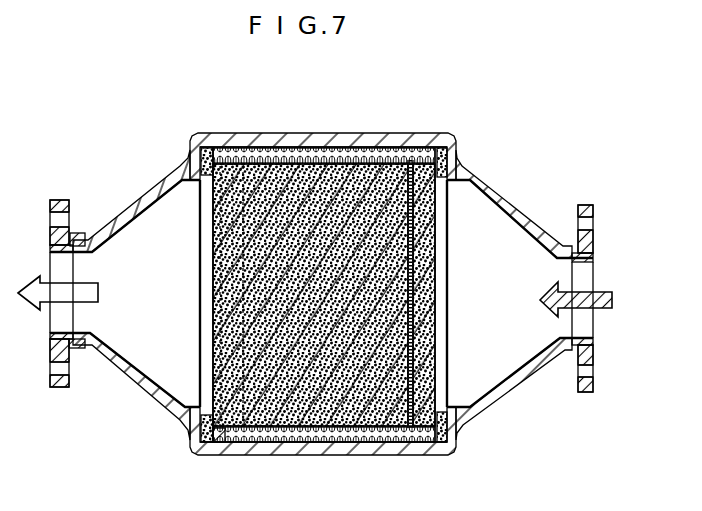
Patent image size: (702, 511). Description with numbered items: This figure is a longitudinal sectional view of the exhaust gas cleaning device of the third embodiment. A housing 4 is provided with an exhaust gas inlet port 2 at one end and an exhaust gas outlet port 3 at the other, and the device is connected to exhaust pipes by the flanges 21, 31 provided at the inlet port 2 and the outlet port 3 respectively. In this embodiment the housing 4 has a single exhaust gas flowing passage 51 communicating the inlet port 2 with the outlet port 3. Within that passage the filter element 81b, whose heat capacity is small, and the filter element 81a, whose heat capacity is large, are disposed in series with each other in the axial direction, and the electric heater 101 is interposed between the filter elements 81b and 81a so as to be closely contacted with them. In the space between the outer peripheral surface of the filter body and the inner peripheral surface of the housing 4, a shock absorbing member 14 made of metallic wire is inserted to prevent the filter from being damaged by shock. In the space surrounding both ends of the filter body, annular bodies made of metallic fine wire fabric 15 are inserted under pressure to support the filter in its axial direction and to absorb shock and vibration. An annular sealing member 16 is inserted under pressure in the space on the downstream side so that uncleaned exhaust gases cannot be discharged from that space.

The exhaust gas inlet port 2 is at (567, 318).
The exhaust gas outlet port 3 is at (62, 315).
The housing 4 is at (332, 124).
The shock absorbing member 14 is at (305, 436).
The annular bodies made of metallic fine wire fabric 15 is at (185, 430).
The annular sealing member 16 is at (223, 440).
The flange 21 is at (583, 203).
The flange 31 is at (57, 200).
The exhaust gas flowing passage 51 is at (160, 250).
The filter element 81a is at (283, 168).
The filter element 81b is at (423, 192).
The electric heater 101 is at (408, 218).